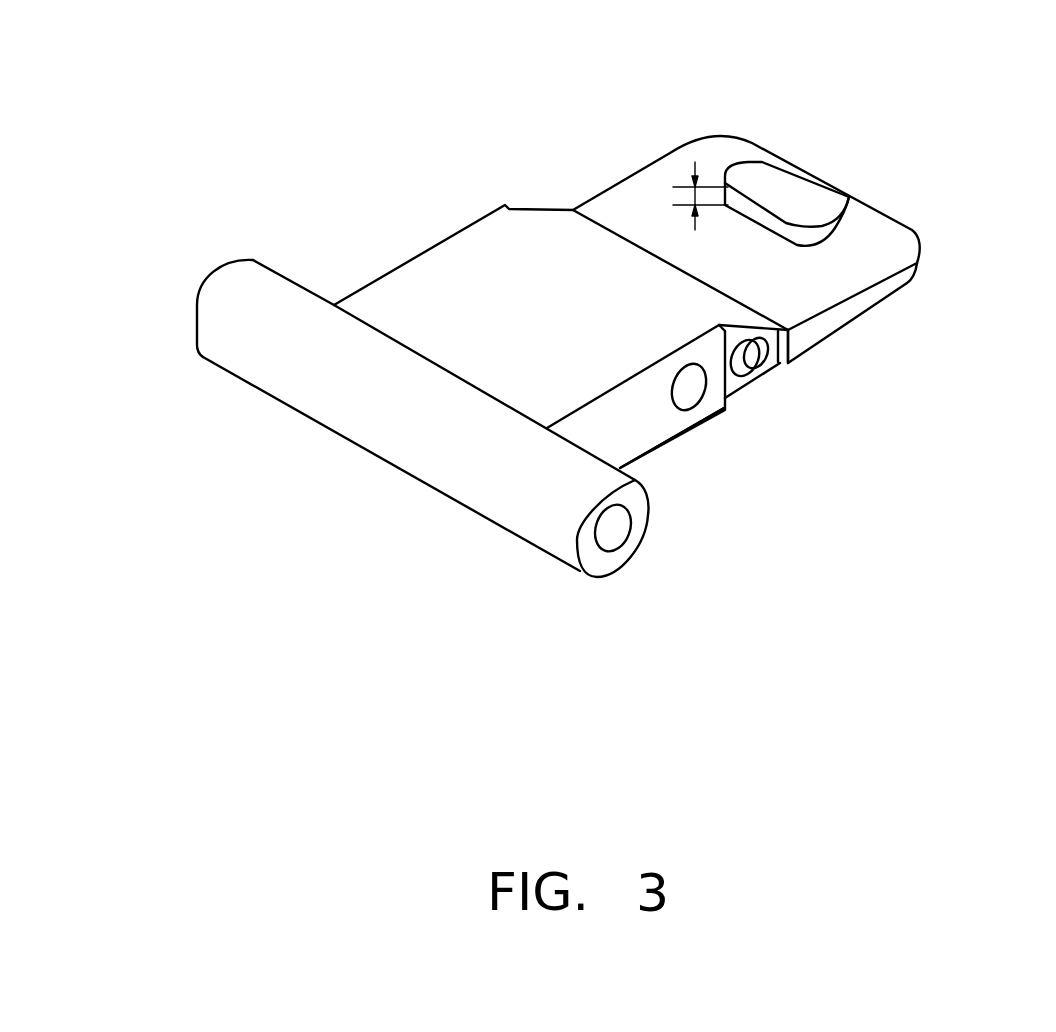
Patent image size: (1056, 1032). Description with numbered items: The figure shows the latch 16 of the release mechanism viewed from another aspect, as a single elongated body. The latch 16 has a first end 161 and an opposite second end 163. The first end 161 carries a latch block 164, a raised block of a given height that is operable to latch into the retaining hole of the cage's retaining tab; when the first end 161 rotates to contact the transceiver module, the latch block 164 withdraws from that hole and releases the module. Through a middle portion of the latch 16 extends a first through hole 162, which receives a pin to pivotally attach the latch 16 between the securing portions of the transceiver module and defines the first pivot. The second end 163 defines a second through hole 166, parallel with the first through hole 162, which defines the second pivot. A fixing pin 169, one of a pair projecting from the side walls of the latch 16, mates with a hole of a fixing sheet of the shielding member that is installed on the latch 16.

The latch 16 is at (860, 100).
The first end 161 is at (873, 248).
The first through hole 162 is at (687, 390).
The second end 163 is at (265, 293).
The latch block 164 is at (800, 208).
The second through hole 166 is at (618, 533).
The fixing pins 169 is at (753, 362).